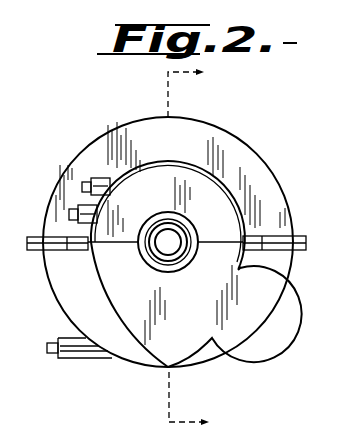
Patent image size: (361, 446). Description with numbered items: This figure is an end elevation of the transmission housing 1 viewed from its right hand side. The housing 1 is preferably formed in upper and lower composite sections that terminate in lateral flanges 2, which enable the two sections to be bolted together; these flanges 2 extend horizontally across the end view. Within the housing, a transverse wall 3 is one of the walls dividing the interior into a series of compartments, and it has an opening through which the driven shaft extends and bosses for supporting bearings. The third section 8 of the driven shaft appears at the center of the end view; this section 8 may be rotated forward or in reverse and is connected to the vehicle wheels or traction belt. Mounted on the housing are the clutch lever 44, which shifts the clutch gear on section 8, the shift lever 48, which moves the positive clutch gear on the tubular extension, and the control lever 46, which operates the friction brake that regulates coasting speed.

The housing 1 is at (226, 146).
The lateral flanges 2 is at (28, 238).
The transverse wall 3 is at (176, 254).
The third section of the driven shaft 8 is at (170, 240).
The clutch lever 44 is at (77, 204).
The control lever 46 is at (42, 357).
The shift lever 48 is at (82, 182).